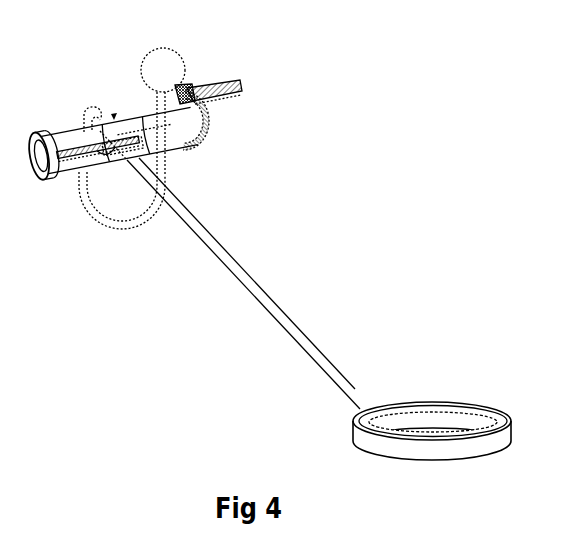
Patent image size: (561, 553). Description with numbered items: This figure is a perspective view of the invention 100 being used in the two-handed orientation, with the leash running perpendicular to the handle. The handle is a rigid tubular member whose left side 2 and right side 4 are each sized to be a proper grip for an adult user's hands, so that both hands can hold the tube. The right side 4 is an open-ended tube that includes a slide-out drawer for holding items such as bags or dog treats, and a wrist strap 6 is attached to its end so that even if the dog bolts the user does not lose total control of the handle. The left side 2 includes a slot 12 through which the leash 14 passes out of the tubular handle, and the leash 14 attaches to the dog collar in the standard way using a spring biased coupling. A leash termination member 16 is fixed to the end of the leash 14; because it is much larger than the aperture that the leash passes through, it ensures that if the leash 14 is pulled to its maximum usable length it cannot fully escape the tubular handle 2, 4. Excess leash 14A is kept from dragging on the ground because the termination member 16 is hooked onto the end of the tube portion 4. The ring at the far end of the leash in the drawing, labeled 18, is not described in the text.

The invention 100 is at (163, 15).
The left side 2 is at (77, 142).
The right side 4 is at (181, 143).
The wrist strap 6 is at (240, 80).
The slot 12 is at (62, 168).
The leash 14 is at (263, 293).
The excess leash 14A is at (118, 228).
The leash termination member 16 is at (173, 67).
The base ring 18 is at (435, 410).